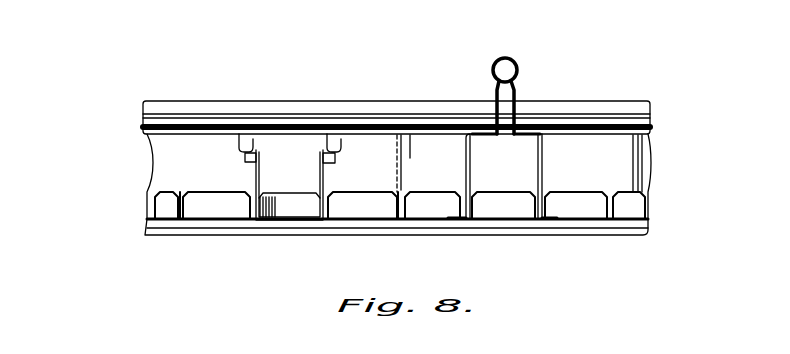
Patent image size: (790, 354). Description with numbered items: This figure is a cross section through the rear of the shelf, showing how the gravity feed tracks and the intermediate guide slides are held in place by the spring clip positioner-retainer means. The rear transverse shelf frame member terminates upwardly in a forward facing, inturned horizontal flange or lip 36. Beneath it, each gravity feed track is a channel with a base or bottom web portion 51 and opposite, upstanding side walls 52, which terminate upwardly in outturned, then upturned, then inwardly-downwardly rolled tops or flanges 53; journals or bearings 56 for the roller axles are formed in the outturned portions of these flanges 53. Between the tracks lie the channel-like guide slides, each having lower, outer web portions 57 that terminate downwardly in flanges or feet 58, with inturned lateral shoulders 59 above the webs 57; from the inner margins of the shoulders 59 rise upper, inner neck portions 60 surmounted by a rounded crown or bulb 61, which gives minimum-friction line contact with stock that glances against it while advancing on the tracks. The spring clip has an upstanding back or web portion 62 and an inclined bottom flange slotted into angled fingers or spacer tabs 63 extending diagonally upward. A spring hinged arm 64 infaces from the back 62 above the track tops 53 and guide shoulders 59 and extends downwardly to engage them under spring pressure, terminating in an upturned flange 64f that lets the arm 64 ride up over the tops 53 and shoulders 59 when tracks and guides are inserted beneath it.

The horizontal flange or lip 36 is at (294, 106).
The base or bottom web portion 51 is at (283, 218).
The upstanding side portions or walls 52 is at (250, 186).
The rolled tops or flanges 53 is at (238, 146).
The journals or bearings 56 is at (337, 165).
The lower, outer web or side portions 57 is at (462, 172).
The flanges or feet 58 is at (458, 222).
The inturned lateral shoulders 59 is at (522, 137).
The upper, inner web or neck portions 60 is at (492, 90).
The rounded top, crown or bulb 61 is at (500, 57).
The upstanding back or web portion 62 is at (618, 176).
The fingers or spacer tabs 63 is at (200, 212).
The spring retainer flange or spring hinged arm 64 is at (230, 121).
The upturned flange 64f is at (145, 126).